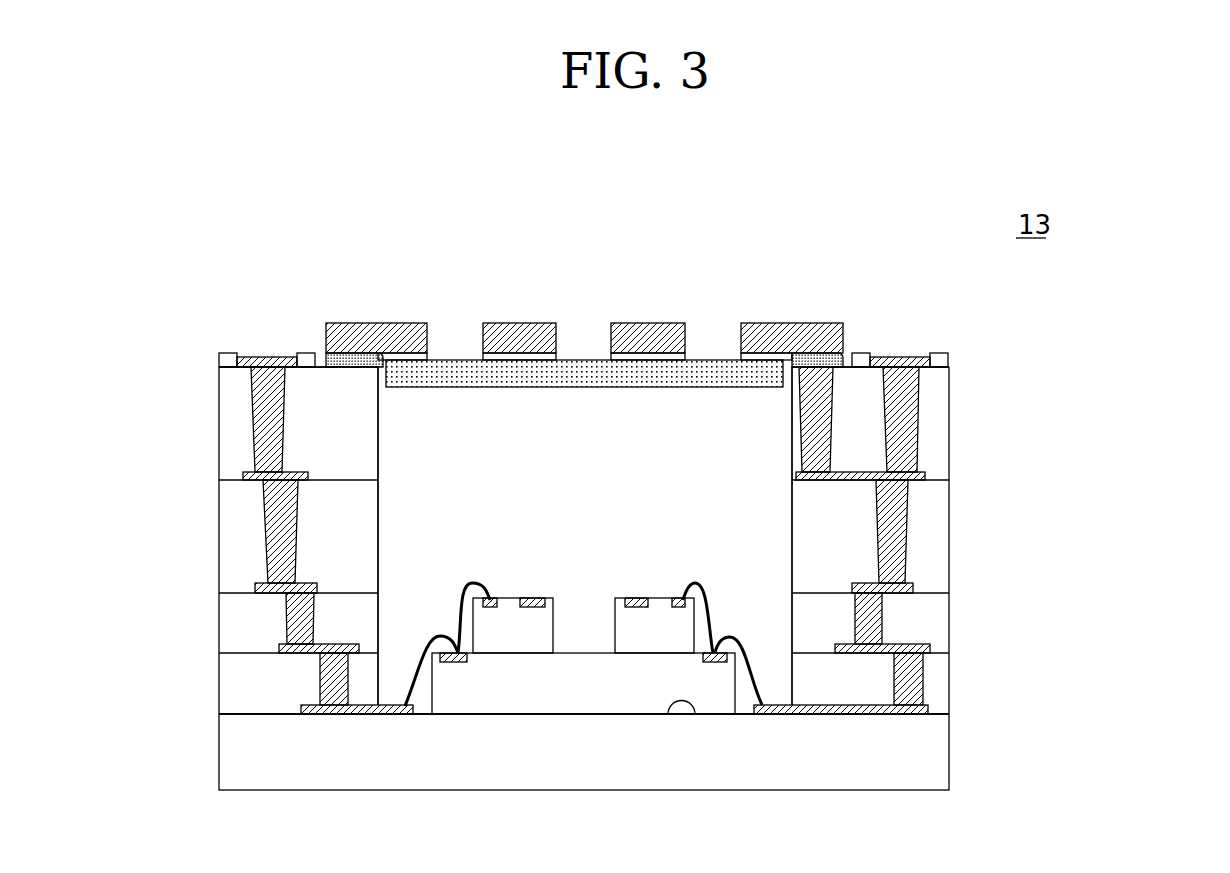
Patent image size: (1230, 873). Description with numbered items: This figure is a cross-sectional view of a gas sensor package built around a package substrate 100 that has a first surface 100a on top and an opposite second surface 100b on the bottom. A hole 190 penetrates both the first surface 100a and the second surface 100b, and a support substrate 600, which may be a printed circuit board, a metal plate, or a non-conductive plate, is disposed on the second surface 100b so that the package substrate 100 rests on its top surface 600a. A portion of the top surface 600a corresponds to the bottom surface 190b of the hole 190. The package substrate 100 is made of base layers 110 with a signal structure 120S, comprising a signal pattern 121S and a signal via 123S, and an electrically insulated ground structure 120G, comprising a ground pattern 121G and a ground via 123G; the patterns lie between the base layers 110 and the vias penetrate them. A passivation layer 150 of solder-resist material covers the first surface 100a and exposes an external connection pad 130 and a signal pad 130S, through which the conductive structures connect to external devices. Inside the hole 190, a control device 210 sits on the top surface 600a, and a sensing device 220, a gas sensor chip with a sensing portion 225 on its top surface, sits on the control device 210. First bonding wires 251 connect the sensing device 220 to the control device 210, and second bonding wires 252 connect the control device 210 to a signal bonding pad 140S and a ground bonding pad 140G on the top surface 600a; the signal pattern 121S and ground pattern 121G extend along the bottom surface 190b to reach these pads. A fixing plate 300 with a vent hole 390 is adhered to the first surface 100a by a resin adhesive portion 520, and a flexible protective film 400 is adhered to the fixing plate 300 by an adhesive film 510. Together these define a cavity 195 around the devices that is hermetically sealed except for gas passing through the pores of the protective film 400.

The package substrate 100 is at (953, 367).
The first surface 100a is at (228, 353).
The second surface 100b is at (233, 714).
The base layers 110 is at (940, 527).
The signal structure 120S is at (201, 536).
The signal pattern 121S is at (243, 476).
The signal via 123S is at (270, 520).
The ground structure 120G is at (970, 536).
The ground pattern 121G is at (925, 475).
The ground via 123G is at (920, 415).
The external connection pad 130 is at (890, 357).
The signal pad 130S is at (268, 357).
The signal bonding pad 140S is at (408, 714).
The ground bonding pad 140G is at (768, 714).
The passivation layer 150 is at (940, 354).
The hole 190 is at (392, 562).
The bottom surface of the hole 190b is at (695, 714).
The cavity 195 is at (652, 421).
The control device 210 is at (615, 690).
The sensing device 220 is at (498, 640).
The sensing portion 225 is at (537, 606).
The first bonding wires 251 is at (460, 615).
The second bonding wires 252 is at (413, 683).
The fixing plate 300 is at (795, 333).
The vent hole 390 is at (440, 344).
The protective film 400 is at (580, 375).
The adhesive film 510 is at (740, 356).
The adhesive portion 520 is at (348, 356).
The support substrate 600 is at (945, 760).
The top surface of the support substrate 600a is at (945, 706).